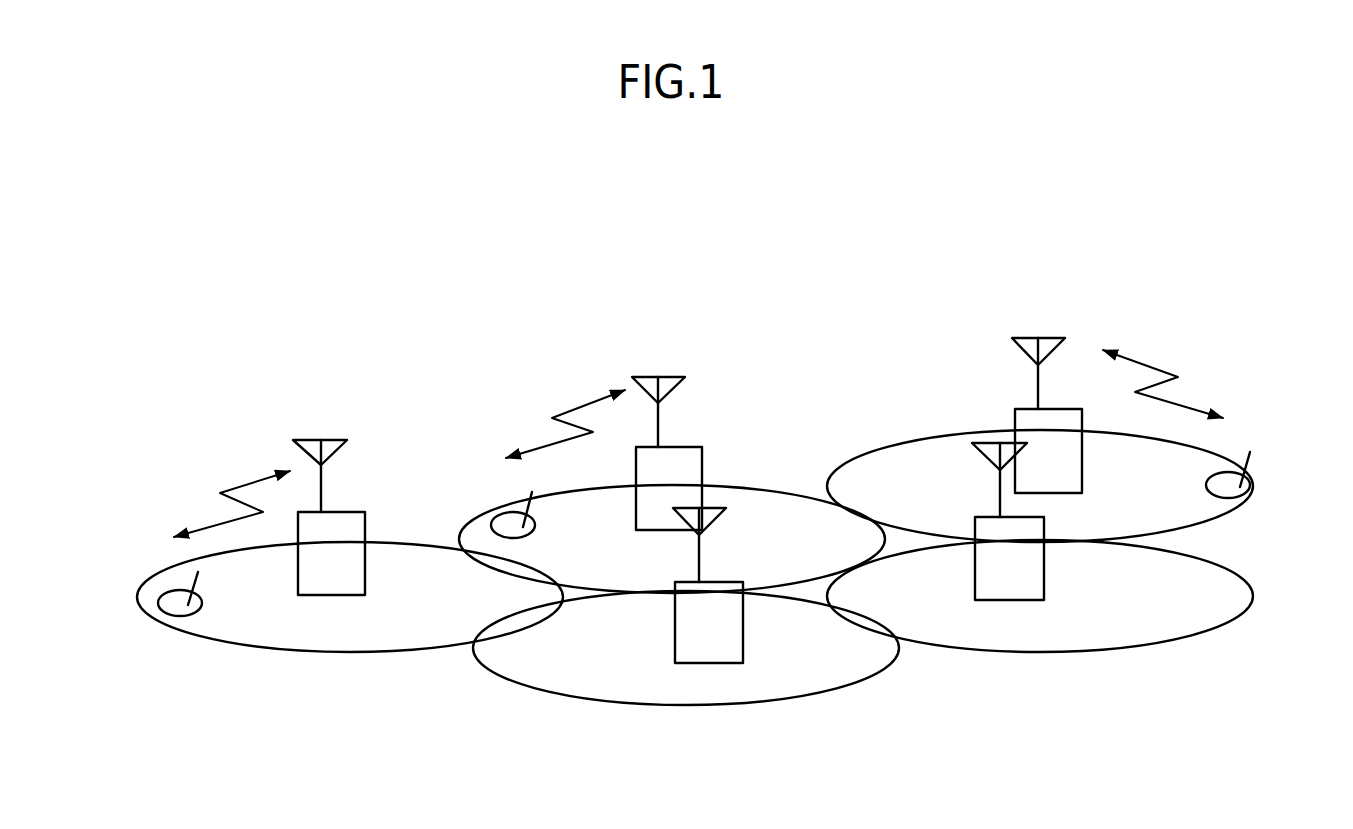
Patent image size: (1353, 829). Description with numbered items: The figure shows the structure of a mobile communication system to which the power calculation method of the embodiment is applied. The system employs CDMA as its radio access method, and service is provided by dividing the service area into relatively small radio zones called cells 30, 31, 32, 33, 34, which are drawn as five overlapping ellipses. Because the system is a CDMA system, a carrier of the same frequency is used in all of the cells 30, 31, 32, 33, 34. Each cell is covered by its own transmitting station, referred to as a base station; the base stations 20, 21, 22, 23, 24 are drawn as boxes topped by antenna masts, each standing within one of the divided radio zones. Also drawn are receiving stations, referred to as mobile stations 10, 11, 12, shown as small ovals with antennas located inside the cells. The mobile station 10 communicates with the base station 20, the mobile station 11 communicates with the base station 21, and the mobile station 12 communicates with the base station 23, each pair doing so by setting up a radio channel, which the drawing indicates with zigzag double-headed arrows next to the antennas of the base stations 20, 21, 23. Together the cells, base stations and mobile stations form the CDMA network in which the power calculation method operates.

The mobile station 10 is at (168, 618).
The mobile station 11 is at (478, 518).
The mobile station 12 is at (1253, 483).
The base station 20 is at (360, 512).
The base station 21 is at (636, 527).
The base station 22 is at (675, 660).
The base station 23 is at (1015, 410).
The base station 24 is at (1044, 595).
The cell 30 is at (408, 652).
The cell 31 is at (773, 487).
The cell 32 is at (842, 688).
The cell 33 is at (895, 442).
The cell 34 is at (1185, 637).